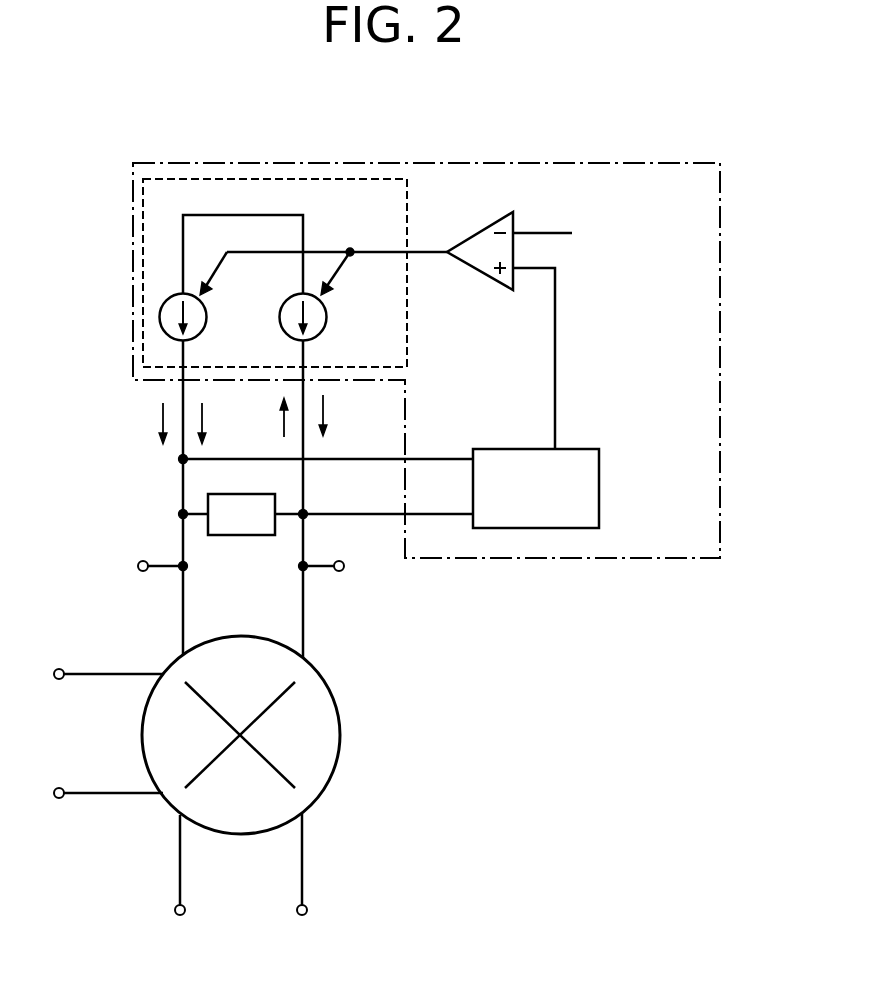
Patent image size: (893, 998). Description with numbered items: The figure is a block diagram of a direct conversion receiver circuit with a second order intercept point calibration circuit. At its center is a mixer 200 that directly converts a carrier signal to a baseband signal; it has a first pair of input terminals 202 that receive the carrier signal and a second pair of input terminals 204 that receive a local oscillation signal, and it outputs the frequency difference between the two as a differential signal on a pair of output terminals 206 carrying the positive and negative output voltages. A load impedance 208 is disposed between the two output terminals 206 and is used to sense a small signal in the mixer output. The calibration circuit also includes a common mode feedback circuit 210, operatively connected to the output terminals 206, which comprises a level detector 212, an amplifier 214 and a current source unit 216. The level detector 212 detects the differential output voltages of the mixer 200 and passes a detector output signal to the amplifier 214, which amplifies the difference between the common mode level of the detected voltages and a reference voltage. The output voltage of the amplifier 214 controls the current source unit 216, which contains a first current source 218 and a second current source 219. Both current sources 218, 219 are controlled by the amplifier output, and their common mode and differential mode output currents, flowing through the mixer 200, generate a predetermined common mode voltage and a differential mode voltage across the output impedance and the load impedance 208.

The mixer 200 is at (342, 735).
The first pair of input terminals 202 is at (108, 675).
The second pair of input terminals 204 is at (180, 867).
The output terminals 206 is at (183, 613).
The load impedance 208 is at (240, 494).
The common mode feedback circuit 210 is at (720, 408).
The level detector 212 is at (583, 449).
The amplifier 214 is at (479, 271).
The current source unit 216 is at (143, 280).
The first current source 218 is at (210, 312).
The second current source 219 is at (330, 312).